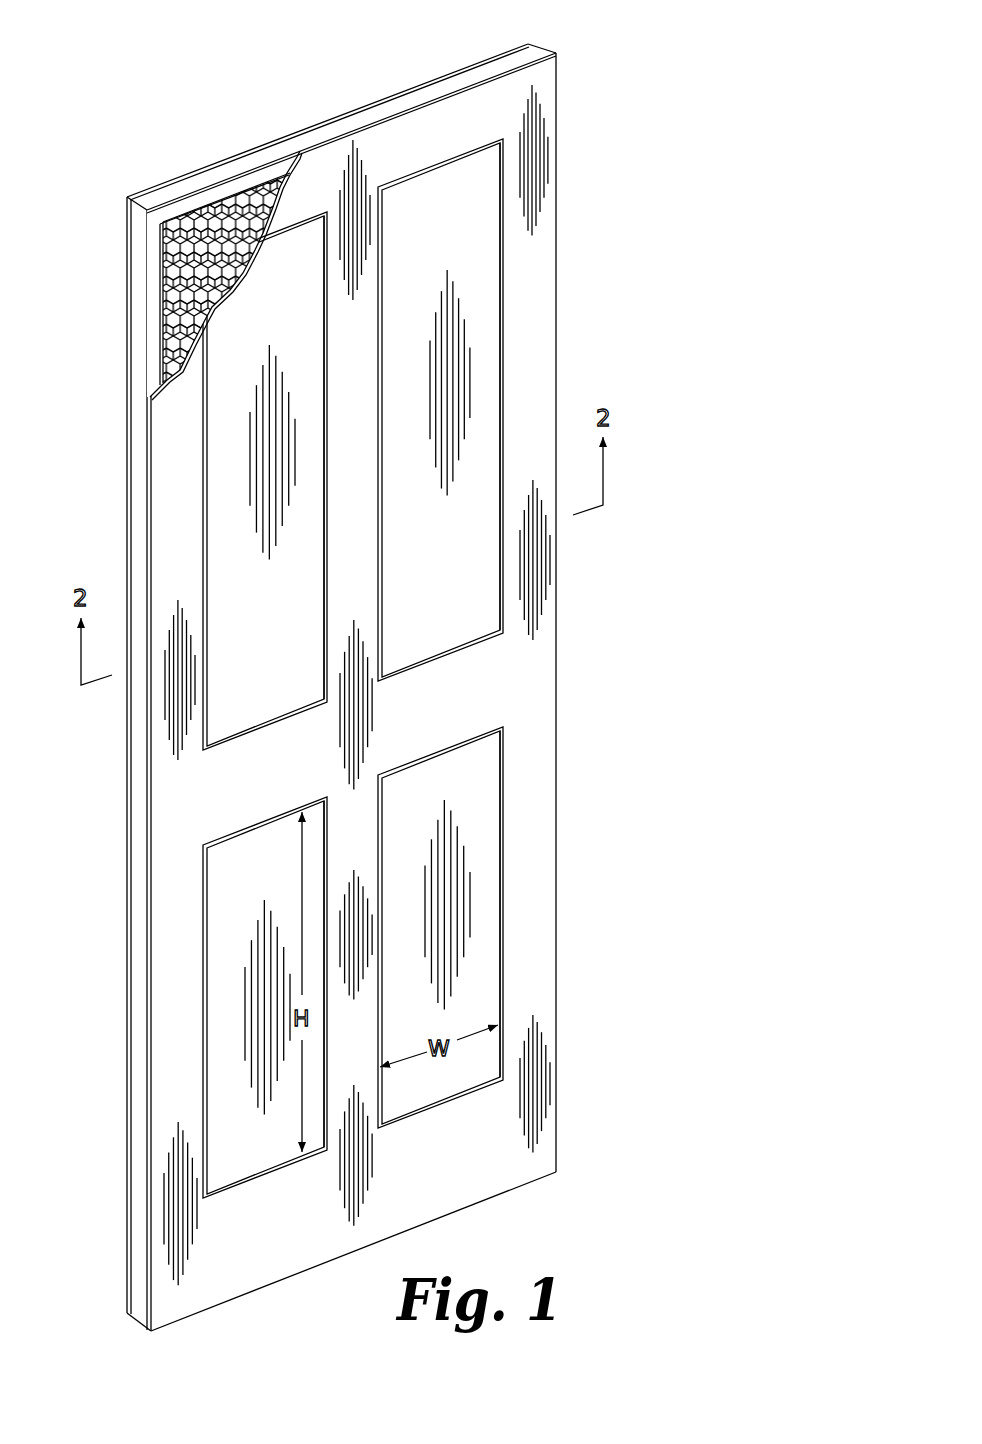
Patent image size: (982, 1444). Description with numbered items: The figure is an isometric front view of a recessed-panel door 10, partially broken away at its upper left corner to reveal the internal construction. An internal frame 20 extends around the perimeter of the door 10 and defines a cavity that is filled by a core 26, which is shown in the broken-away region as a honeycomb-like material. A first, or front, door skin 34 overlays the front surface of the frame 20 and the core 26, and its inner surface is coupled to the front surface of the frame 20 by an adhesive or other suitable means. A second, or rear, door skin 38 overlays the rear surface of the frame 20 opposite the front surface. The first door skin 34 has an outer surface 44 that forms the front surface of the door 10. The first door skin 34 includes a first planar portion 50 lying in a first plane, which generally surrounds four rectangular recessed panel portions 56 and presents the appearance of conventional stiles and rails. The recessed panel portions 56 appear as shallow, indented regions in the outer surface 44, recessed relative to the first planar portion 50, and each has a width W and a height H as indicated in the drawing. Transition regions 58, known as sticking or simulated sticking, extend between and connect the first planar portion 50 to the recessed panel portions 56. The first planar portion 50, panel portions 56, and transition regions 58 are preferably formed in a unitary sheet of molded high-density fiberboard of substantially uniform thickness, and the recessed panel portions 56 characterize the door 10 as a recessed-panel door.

The door 10 is at (625, 105).
The internal frame 20 is at (155, 217).
The core 26 is at (255, 190).
The first door skin 34 is at (313, 178).
The second door skin 38 is at (293, 122).
The outer surface 44 is at (430, 135).
The first planar portion 50 is at (175, 447).
The recessed panel portions 56 is at (472, 372).
The transition regions 58 is at (459, 646).